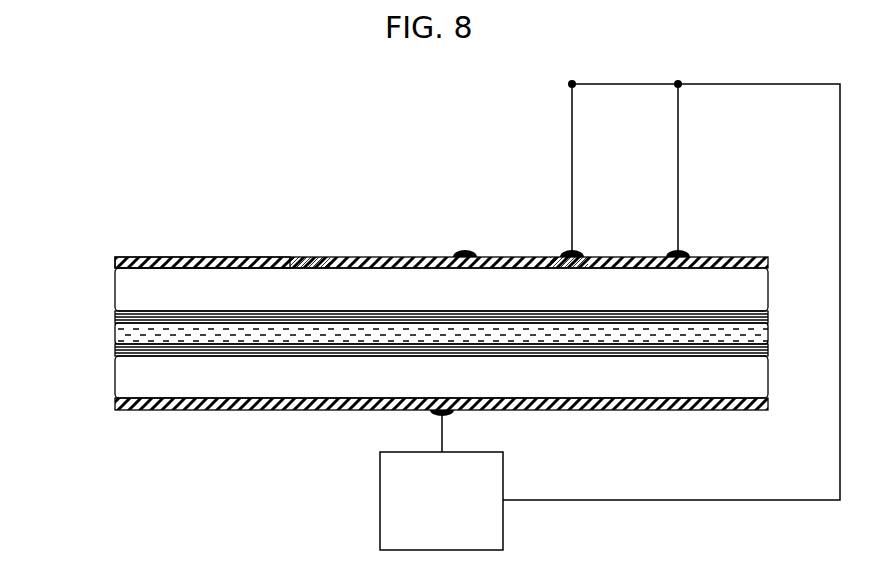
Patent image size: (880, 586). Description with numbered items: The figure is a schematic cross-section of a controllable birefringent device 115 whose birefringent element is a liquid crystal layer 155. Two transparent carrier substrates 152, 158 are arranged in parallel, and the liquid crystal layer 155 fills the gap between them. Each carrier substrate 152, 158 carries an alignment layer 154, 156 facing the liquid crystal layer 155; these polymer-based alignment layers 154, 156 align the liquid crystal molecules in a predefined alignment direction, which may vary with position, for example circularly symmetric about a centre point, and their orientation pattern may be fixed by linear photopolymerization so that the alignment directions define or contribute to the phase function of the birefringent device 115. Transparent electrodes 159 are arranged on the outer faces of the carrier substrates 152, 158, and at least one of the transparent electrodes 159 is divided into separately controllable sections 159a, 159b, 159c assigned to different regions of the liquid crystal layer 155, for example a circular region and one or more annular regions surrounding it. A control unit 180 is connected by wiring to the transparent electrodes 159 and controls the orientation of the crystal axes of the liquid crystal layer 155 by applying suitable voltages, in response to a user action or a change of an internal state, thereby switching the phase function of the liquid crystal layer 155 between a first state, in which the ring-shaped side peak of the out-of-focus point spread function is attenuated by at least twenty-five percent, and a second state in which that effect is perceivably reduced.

The birefringent device 115 is at (197, 108).
The transparent carrier substrate 152 is at (114, 291).
The alignment layer 154 is at (114, 317).
The liquid crystal layer 155 is at (114, 333).
The alignment layer 156 is at (114, 350).
The transparent carrier substrate 158 is at (114, 378).
The transparent electrode 159 is at (92, 422).
The separately controllable section 159a is at (200, 257).
The separately controllable section 159b is at (308, 257).
The separately controllable section 159c is at (440, 257).
The control unit 180 is at (380, 500).